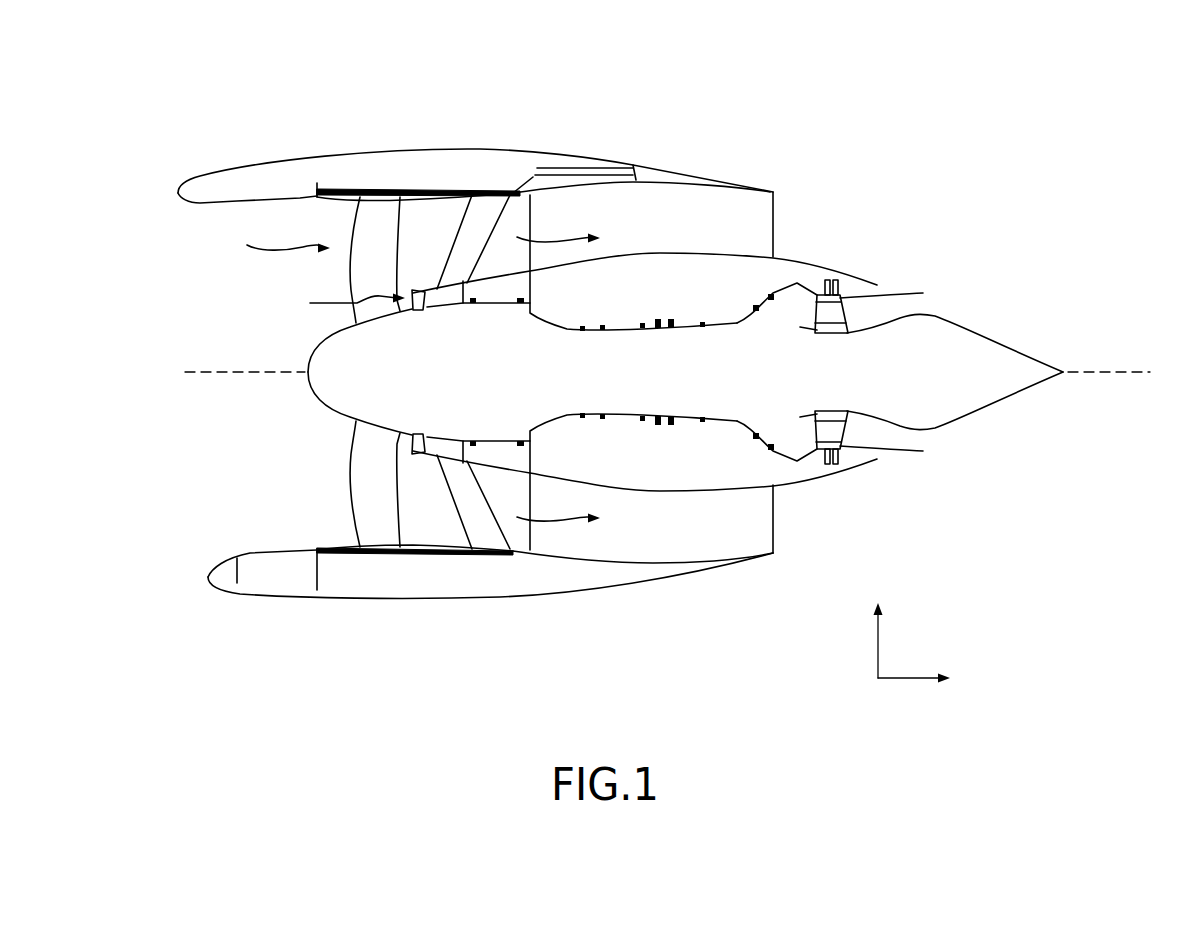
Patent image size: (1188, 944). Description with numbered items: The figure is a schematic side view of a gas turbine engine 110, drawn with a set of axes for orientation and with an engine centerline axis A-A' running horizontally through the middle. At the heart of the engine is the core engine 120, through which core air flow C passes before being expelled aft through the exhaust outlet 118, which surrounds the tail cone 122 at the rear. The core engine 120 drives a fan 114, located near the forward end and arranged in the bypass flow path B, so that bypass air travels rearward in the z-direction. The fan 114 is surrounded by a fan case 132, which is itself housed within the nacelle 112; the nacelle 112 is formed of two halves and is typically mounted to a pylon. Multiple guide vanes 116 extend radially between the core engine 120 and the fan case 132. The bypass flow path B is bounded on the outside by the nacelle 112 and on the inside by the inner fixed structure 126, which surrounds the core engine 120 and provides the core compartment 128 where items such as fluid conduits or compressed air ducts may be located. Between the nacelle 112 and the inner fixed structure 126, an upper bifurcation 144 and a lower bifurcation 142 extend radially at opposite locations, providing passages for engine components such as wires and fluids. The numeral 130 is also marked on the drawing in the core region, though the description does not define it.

The gas turbine engine 110 is at (782, 110).
The nacelle 112 is at (352, 145).
The fan 114 is at (360, 478).
The guide vanes 116 is at (470, 245).
The exhaust outlet 118 is at (920, 307).
The core engine 120 is at (662, 315).
The tail cone 122 is at (960, 403).
The inner fixed structure 126 is at (665, 246).
The core compartment 128 is at (647, 476).
The turbine section 130 is at (740, 458).
The fan case 132 is at (343, 556).
The lower bifurcation 142 is at (748, 542).
The upper bifurcation 144 is at (775, 209).